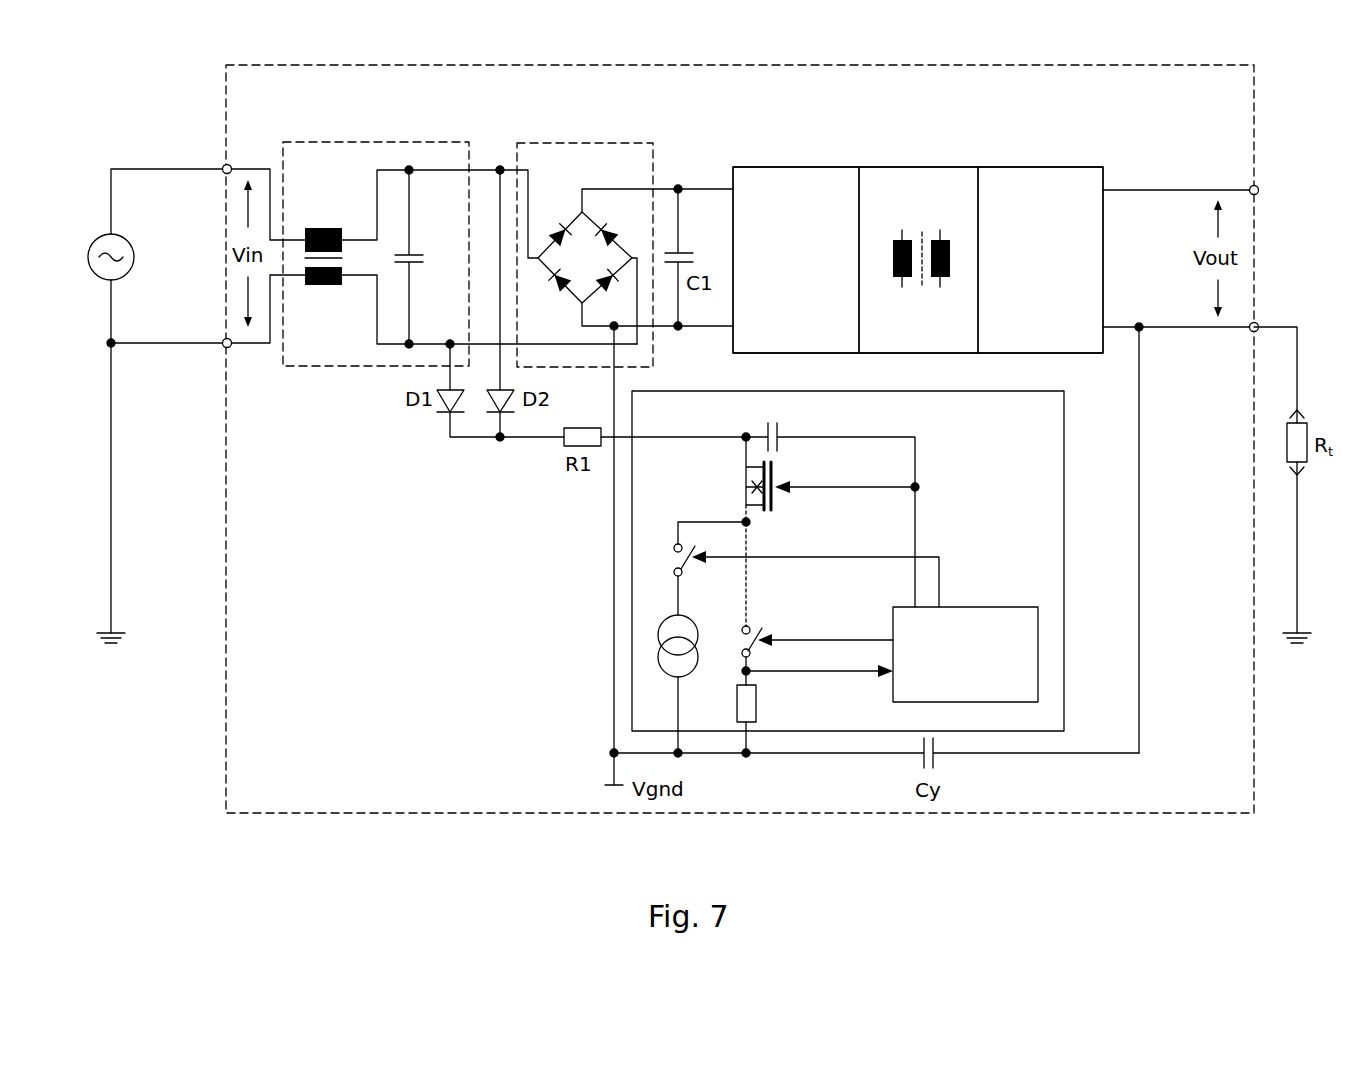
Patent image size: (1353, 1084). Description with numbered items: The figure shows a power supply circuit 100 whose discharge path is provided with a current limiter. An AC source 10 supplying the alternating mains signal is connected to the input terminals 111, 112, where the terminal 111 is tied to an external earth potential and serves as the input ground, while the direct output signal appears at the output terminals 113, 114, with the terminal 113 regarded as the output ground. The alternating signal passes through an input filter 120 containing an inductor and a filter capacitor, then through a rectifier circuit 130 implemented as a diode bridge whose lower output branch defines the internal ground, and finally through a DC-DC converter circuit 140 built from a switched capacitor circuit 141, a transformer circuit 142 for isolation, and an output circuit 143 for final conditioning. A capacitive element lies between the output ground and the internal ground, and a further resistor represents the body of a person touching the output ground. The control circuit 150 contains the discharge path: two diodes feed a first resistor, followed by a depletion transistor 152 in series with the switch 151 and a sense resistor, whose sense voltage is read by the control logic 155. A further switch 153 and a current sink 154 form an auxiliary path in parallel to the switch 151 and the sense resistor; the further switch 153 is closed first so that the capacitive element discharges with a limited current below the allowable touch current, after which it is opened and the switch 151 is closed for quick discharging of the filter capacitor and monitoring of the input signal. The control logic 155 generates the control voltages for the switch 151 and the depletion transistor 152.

The AC source 10 is at (96, 238).
The power supply circuit 100 is at (863, 813).
The terminal 111 is at (226, 347).
The terminal 112 is at (225, 165).
The terminal 113 is at (1256, 325).
The terminal 114 is at (1256, 188).
The input filter 120 is at (346, 142).
The rectifier circuit 130 is at (580, 143).
The DC-DC converter circuit 140 is at (918, 226).
The switched capacitor circuit 141 is at (796, 260).
The transformer circuit 142 is at (918, 260).
The output circuit 143 is at (1040, 260).
The control circuit 150 is at (885, 571).
The switch 151 is at (750, 626).
The depletion transistor 152 is at (767, 512).
The further switch 153 is at (684, 576).
The current sink 154 is at (690, 677).
The control logic 155 is at (963, 607).